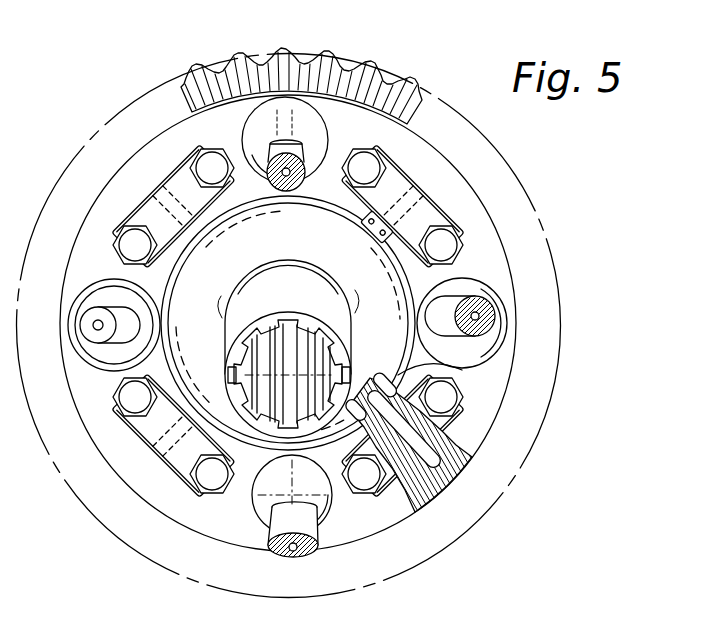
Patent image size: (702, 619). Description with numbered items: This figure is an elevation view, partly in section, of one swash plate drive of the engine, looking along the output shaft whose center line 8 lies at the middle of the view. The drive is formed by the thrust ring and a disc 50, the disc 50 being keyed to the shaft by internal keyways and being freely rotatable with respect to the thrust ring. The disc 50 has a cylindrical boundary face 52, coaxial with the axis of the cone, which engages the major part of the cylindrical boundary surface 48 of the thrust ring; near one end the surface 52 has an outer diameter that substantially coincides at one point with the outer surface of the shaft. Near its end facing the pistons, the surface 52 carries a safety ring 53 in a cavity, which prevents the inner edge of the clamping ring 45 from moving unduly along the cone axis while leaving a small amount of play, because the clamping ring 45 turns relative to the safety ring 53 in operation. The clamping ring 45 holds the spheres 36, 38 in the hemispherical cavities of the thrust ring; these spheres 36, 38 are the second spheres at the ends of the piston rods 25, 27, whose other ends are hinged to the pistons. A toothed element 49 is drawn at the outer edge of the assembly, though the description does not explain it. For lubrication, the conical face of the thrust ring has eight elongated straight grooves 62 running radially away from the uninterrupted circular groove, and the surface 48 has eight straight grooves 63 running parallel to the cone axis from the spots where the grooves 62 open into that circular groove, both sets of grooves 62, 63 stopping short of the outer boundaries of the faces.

The center line 8 is at (289, 373).
The piston rod 25 is at (305, 186).
The piston rod 27 is at (292, 556).
The second sphere 36 is at (263, 135).
The second sphere 38 is at (262, 499).
The clamping ring 45 is at (416, 135).
The cylindrical boundary surface 48 is at (458, 370).
The ring gear 49 is at (371, 66).
The disc 50 is at (192, 367).
The cylindrical boundary face 52 is at (373, 384).
The safety ring 53 is at (367, 264).
The elongated straight grooves 62 is at (293, 126).
The elongated straight grooves 63 is at (207, 243).